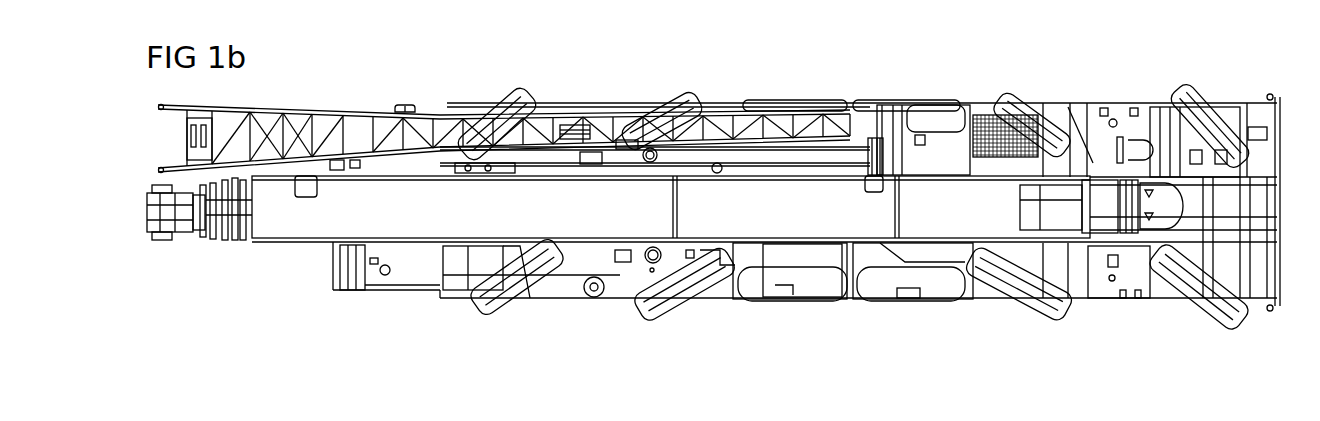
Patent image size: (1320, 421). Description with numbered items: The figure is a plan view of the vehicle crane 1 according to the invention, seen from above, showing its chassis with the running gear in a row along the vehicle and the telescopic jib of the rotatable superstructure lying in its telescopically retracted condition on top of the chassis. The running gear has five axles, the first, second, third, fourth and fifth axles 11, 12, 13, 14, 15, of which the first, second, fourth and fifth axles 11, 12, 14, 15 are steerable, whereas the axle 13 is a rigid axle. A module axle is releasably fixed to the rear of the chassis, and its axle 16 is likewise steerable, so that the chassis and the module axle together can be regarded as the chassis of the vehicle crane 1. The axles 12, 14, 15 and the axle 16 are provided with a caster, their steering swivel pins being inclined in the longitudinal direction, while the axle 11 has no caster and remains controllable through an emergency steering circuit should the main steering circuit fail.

The vehicle crane 1 is at (240, 270).
The first axle 11 is at (530, 97).
The second axle 12 is at (707, 97).
The third axle 13 is at (795, 100).
The fourth axle 14 is at (908, 100).
The fifth axle 15 is at (990, 97).
The axle of the module axle 16 is at (1183, 90).